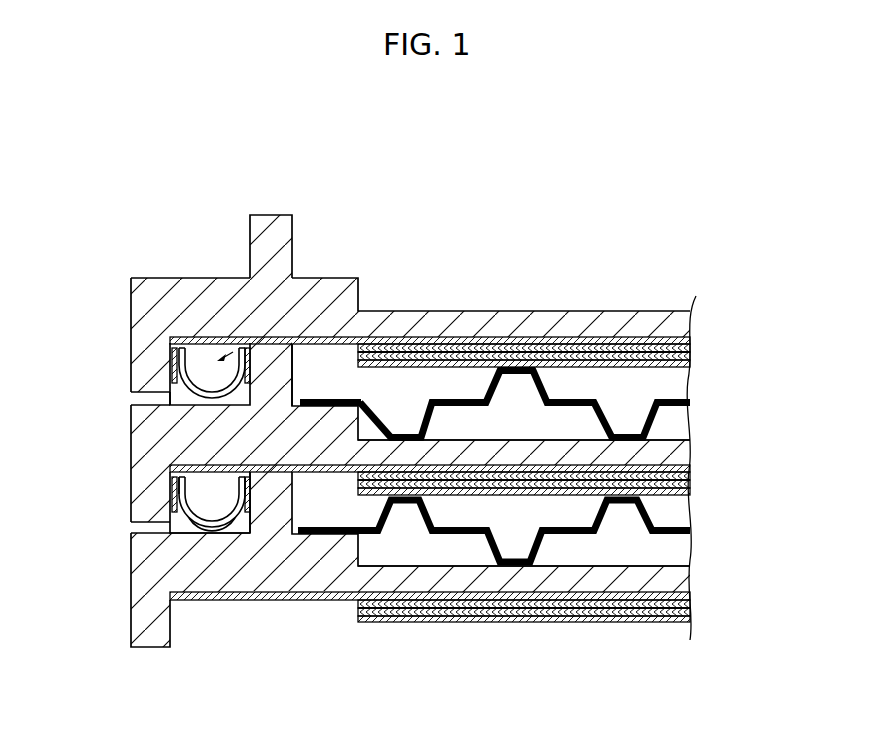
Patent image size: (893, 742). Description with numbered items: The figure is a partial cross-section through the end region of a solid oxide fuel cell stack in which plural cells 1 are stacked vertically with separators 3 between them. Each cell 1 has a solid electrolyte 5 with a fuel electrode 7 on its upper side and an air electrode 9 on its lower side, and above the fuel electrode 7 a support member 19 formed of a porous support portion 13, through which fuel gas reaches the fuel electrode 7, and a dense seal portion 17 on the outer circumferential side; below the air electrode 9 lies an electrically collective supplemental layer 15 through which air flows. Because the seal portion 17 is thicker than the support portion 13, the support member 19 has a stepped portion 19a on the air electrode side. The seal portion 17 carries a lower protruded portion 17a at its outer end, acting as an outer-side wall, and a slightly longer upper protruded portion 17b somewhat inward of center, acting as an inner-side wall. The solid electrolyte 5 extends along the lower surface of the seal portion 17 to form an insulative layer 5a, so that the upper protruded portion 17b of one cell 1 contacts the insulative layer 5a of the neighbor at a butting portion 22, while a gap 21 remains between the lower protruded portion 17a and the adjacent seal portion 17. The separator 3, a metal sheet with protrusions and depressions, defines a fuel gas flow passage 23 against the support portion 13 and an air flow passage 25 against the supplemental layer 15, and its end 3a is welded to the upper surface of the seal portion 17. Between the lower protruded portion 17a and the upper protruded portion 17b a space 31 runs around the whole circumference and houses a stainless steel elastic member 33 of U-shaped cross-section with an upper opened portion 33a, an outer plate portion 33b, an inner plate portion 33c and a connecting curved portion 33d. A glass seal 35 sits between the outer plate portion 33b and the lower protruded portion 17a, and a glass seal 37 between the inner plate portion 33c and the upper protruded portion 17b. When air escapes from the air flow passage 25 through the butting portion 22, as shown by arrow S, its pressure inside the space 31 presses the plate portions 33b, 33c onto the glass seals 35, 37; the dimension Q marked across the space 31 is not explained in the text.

The cell 1 is at (705, 312).
The separator 3 is at (688, 403).
The end of the separator 3a is at (340, 399).
The solid electrolyte 5 is at (686, 479).
The insulative layer 5a is at (220, 453).
The fuel electrode 7 is at (686, 472).
The air electrode 9 is at (686, 485).
The support portion 13 is at (690, 453).
The electrically collective supplemental layer 15 is at (686, 492).
The seal portion 17 is at (352, 417).
The lower protruded portion 17a is at (133, 503).
The upper protruded portion 17b is at (178, 377).
The support member 19 is at (407, 417).
The stepped portion 19a is at (385, 392).
The gap 21 is at (133, 527).
The butting portion 22 is at (275, 338).
The fuel gas flow passage 23 is at (575, 300).
The air flow passage 25 is at (440, 388).
The space 31 is at (205, 357).
The elastic member 33 is at (162, 532).
The opened portion 33a is at (208, 487).
The outer plate portion 33b is at (192, 531).
The inner plate portion 33c is at (227, 530).
The curved portion 33d is at (214, 530).
The glass seal 35 is at (187, 524).
The glass seal 37 is at (244, 528).
The arrow S is at (295, 348).
The groove width Q is at (246, 205).